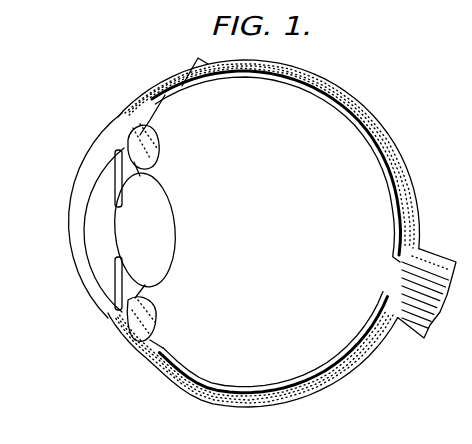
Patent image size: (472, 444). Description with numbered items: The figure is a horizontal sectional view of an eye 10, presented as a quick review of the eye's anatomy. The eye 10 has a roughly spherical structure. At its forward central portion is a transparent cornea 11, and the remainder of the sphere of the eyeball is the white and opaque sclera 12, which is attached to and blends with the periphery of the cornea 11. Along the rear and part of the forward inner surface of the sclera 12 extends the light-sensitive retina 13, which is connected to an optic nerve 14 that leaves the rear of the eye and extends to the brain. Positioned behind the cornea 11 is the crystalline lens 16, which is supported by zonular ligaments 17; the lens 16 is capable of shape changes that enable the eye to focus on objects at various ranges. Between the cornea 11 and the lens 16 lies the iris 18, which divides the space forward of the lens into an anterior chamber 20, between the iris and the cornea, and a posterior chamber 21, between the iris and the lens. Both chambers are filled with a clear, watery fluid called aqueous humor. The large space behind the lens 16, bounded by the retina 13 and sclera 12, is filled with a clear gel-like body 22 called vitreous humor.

The eye 10 is at (349, 82).
The cornea 11 is at (97, 157).
The sclera 12 is at (163, 77).
The retina 13 is at (364, 128).
The optic nerve 14 is at (447, 318).
The crystalline lens 16 is at (165, 200).
The zonular ligaments 17 is at (152, 168).
The iris 18 is at (117, 182).
The anterior chamber 20 is at (110, 237).
The posterior chamber 21 is at (130, 290).
The vitreous body 22 is at (289, 252).